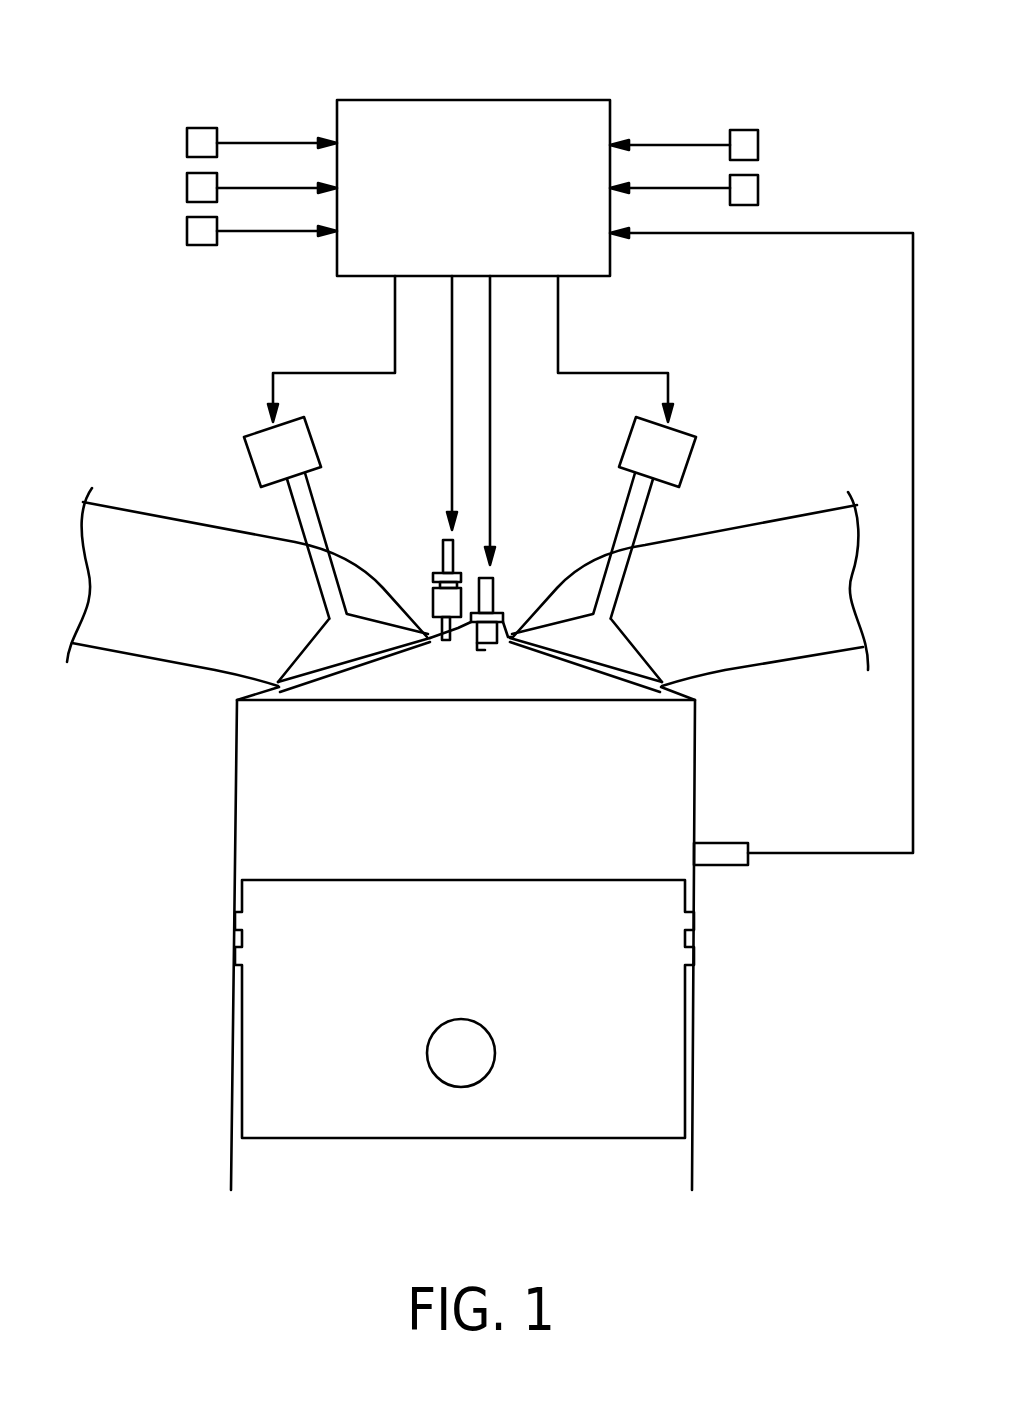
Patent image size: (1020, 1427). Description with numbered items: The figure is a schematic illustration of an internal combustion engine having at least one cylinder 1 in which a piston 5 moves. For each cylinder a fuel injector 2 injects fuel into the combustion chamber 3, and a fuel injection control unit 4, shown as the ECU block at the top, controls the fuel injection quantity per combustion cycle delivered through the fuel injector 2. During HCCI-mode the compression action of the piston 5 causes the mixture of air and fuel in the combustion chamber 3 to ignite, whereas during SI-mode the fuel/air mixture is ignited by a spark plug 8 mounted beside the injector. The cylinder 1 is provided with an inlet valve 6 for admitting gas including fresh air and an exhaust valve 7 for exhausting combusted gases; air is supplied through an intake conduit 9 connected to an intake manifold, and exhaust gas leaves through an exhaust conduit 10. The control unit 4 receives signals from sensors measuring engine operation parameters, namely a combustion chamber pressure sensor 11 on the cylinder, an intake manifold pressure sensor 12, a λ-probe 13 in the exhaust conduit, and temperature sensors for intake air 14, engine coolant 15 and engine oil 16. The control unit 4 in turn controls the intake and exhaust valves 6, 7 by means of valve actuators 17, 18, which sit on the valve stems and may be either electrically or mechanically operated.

The cylinder 1 is at (233, 793).
The fuel injector 2 is at (447, 568).
The combustion chamber 3 is at (481, 825).
The fuel injection control unit 4 is at (485, 110).
The piston 5 is at (672, 1042).
The inlet valve 6 is at (315, 548).
The exhaust valve 7 is at (622, 553).
The spark plug 8 is at (490, 597).
The intake conduit 9 is at (165, 663).
The exhaust conduit 10 is at (763, 665).
The combustion chamber pressure sensor 11 is at (720, 856).
The intake manifold pressure sensor 12 is at (758, 188).
The λ-probe 13 is at (758, 145).
The intake air temperature sensor 14 is at (187, 231).
The engine coolant temperature sensor 15 is at (187, 187).
The engine oil temperature sensor 16 is at (187, 142).
The valve actuator 17 is at (257, 442).
The valve actuator 18 is at (680, 450).